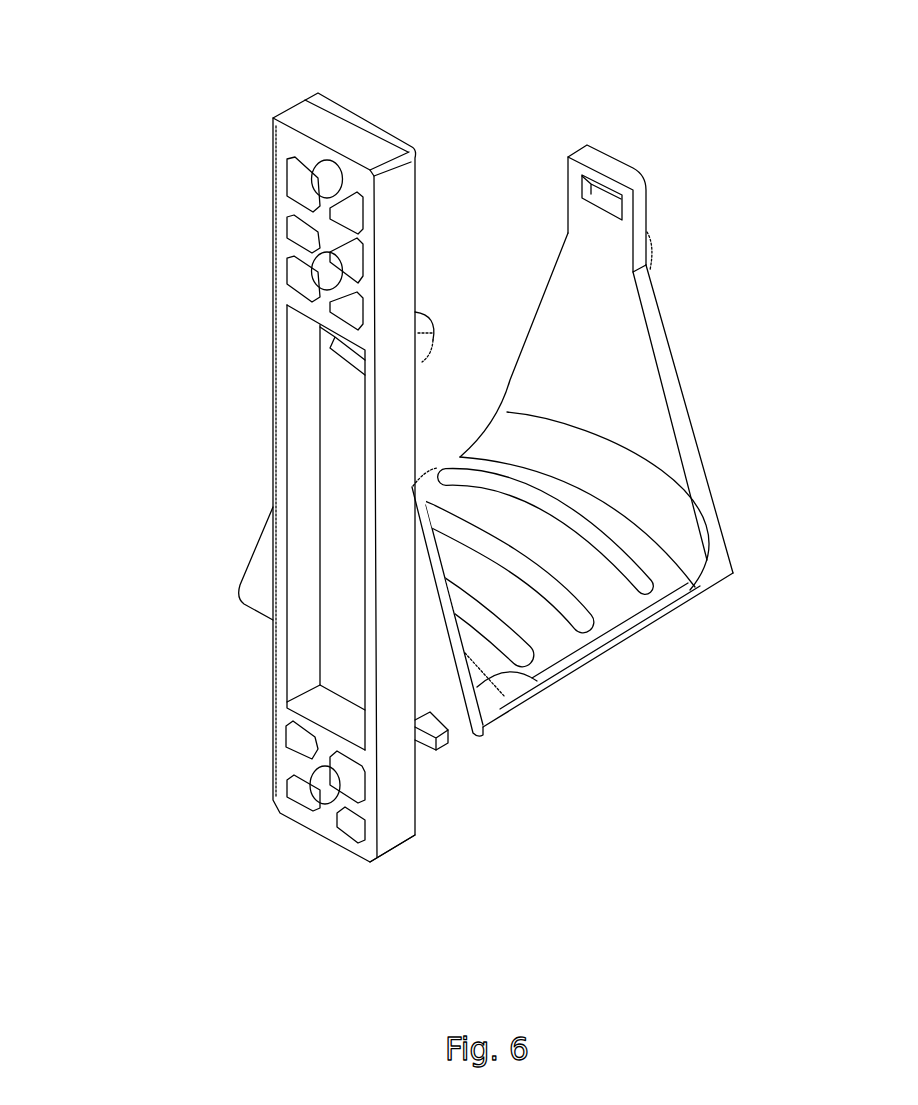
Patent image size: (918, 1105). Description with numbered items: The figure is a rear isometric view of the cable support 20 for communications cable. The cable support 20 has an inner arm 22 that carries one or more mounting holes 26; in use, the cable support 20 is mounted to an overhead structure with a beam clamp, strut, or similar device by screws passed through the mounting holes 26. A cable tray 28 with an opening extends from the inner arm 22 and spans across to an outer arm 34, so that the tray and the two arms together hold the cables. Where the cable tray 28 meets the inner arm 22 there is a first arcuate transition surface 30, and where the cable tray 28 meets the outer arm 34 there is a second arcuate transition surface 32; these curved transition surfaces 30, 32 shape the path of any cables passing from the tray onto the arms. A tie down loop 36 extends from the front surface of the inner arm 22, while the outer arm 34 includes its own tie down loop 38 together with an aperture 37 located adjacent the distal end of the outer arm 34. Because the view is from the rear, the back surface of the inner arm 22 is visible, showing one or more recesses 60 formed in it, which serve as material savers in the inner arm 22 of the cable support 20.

The cable support 20 is at (192, 129).
The inner arm 22 is at (273, 293).
The mounting holes 26 is at (328, 182).
The cable tray 28 is at (667, 588).
The first arcuate transition surface 30 is at (535, 684).
The second arcuate transition surface 32 is at (677, 537).
The outer arm 34 is at (660, 318).
The tie down loop 36 is at (433, 340).
The aperture 37 is at (615, 195).
The tie down loop 38 is at (615, 160).
The recesses 60 is at (297, 742).